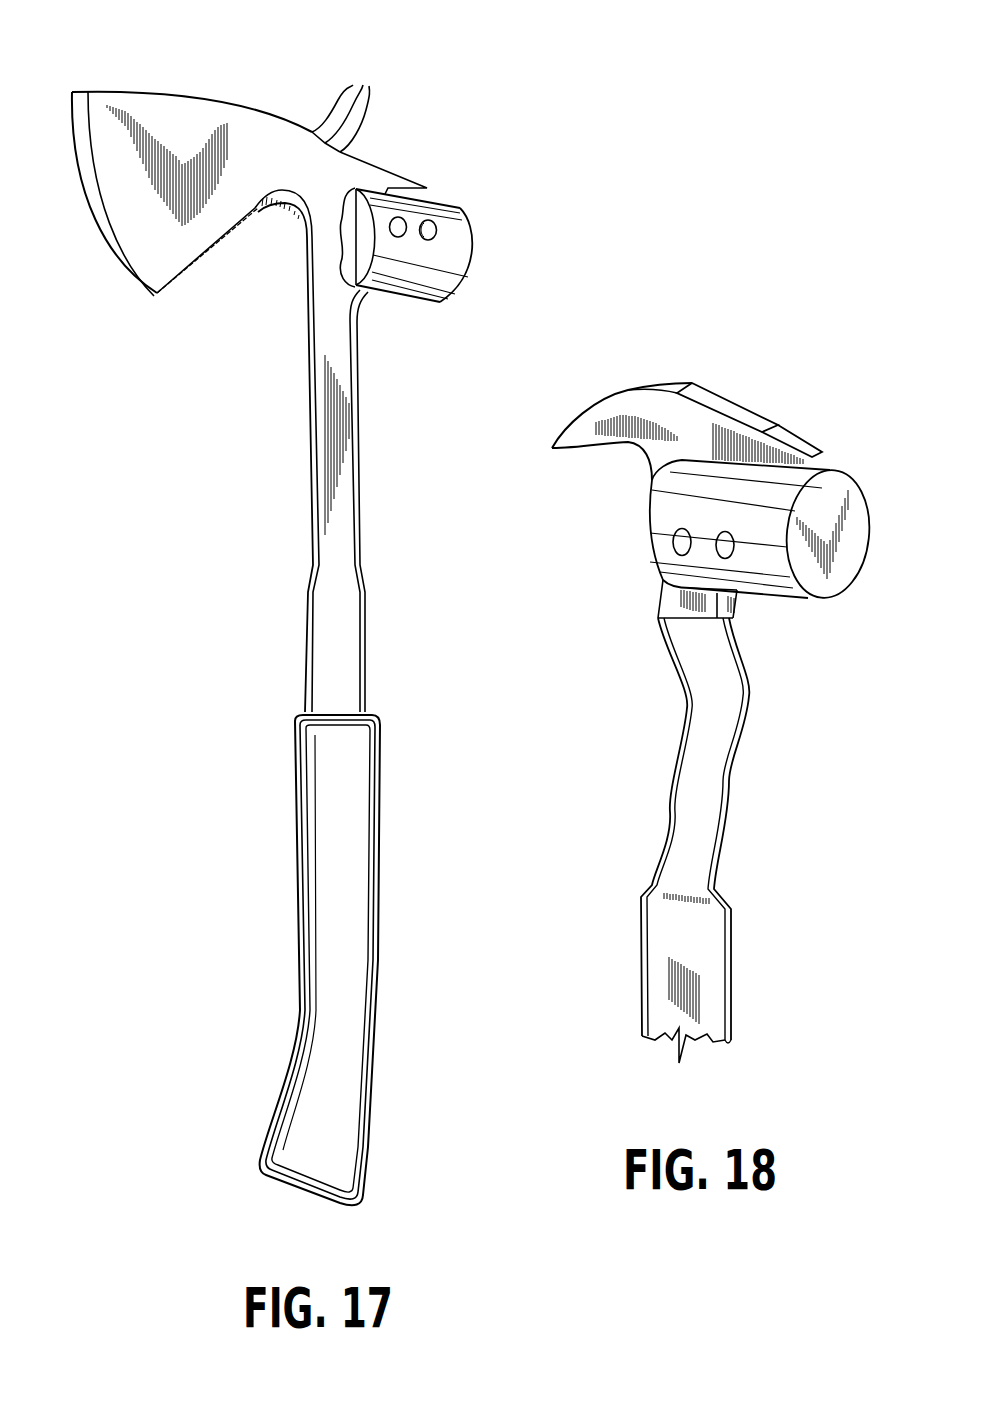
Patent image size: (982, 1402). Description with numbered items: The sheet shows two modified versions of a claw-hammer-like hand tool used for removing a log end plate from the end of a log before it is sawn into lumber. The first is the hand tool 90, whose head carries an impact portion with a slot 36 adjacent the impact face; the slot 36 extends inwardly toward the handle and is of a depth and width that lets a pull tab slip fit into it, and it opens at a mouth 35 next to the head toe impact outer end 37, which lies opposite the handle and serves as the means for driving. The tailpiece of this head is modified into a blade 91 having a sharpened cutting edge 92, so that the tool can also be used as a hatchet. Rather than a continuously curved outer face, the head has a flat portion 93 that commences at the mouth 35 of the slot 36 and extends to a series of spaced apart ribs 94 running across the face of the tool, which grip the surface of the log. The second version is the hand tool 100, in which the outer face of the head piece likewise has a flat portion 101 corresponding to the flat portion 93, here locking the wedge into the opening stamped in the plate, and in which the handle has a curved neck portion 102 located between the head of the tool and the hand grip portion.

In FIG. 17, the mouth 35 is at (423, 193).
In FIG. 18, the mouth 35 is at (805, 463).
In FIG. 17, the slot 36 is at (432, 222).
In FIG. 18, the slot 36 is at (703, 544).
In FIG. 17, the head toe impact outer end 37 is at (453, 252).
In FIG. 17, the hand tool 90 is at (375, 462).
In FIG. 17, the blade 91 is at (136, 264).
In FIG. 17, the sharpened cutting edge 92 is at (100, 250).
In FIG. 17, the flat portion 93 is at (388, 174).
In FIG. 17, the ribs 94 is at (345, 103).
In FIG. 18, the hand tool 100 is at (804, 746).
In FIG. 18, the flat portion 101 is at (705, 402).
In FIG. 18, the curved neck portion 102 is at (679, 723).